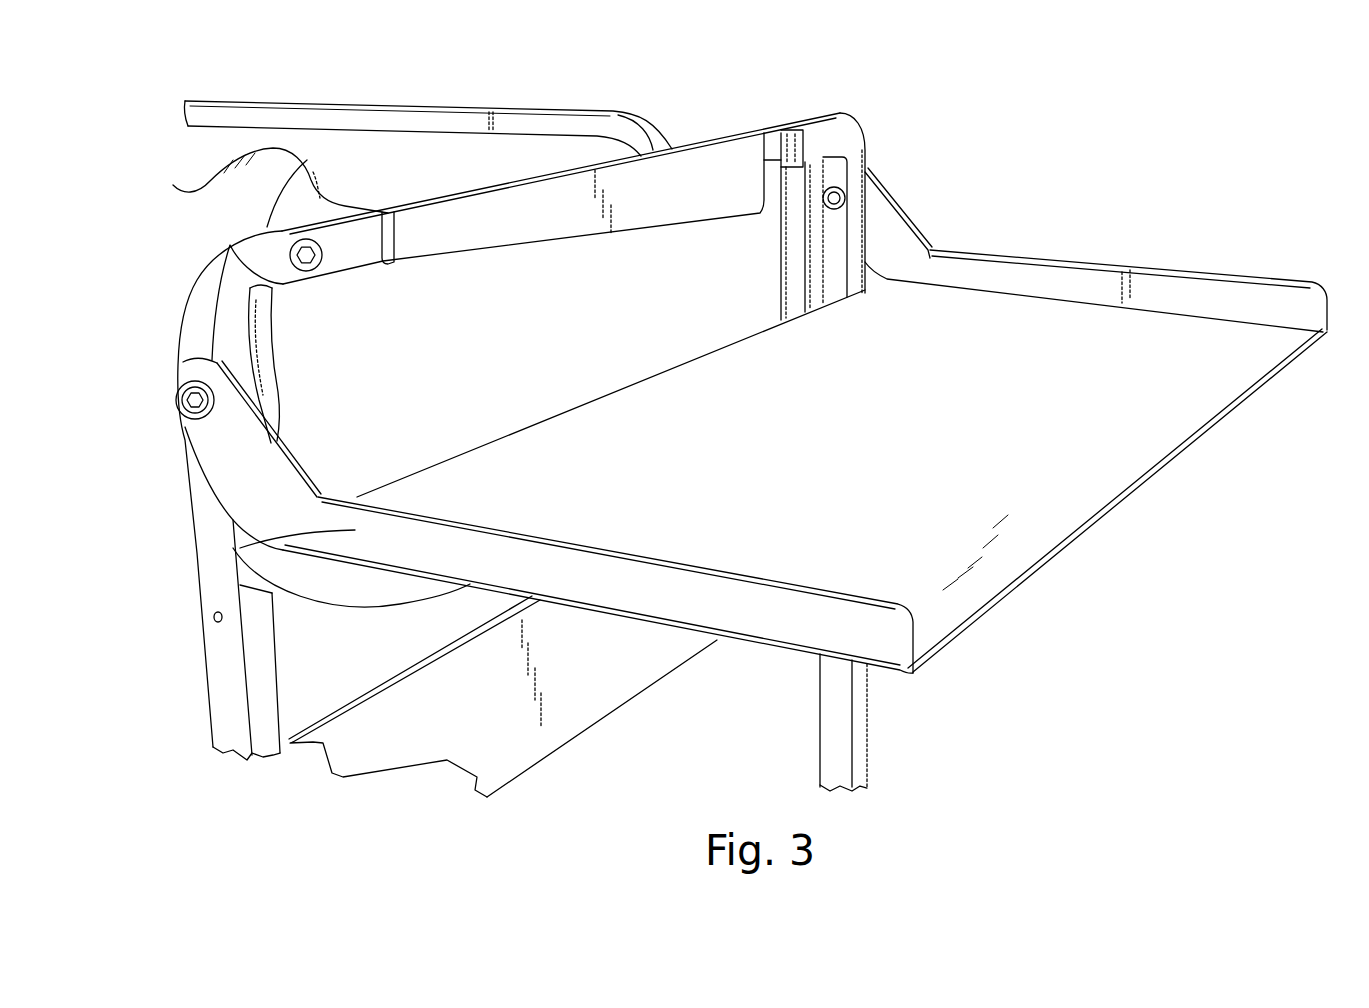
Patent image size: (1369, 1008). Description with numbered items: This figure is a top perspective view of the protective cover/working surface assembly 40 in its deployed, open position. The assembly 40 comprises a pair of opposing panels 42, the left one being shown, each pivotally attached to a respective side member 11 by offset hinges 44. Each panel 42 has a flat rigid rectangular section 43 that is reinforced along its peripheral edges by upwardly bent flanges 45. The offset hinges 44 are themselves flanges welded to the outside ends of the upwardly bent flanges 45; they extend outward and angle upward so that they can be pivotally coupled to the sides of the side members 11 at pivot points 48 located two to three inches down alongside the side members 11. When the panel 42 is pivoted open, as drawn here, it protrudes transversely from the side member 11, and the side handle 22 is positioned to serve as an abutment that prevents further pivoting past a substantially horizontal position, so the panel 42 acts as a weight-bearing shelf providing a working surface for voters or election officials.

The protective cover/working surface assembly 40 is at (720, 428).
The opposing panel 42 is at (1168, 481).
The flat rigid rectangular section 43 is at (913, 455).
The offset hinge 44 is at (903, 208).
The upwardly bent flange 45 is at (1060, 261).
The pivot point 48 is at (845, 190).
The side member 11 is at (268, 318).
The side handle 22 is at (260, 569).